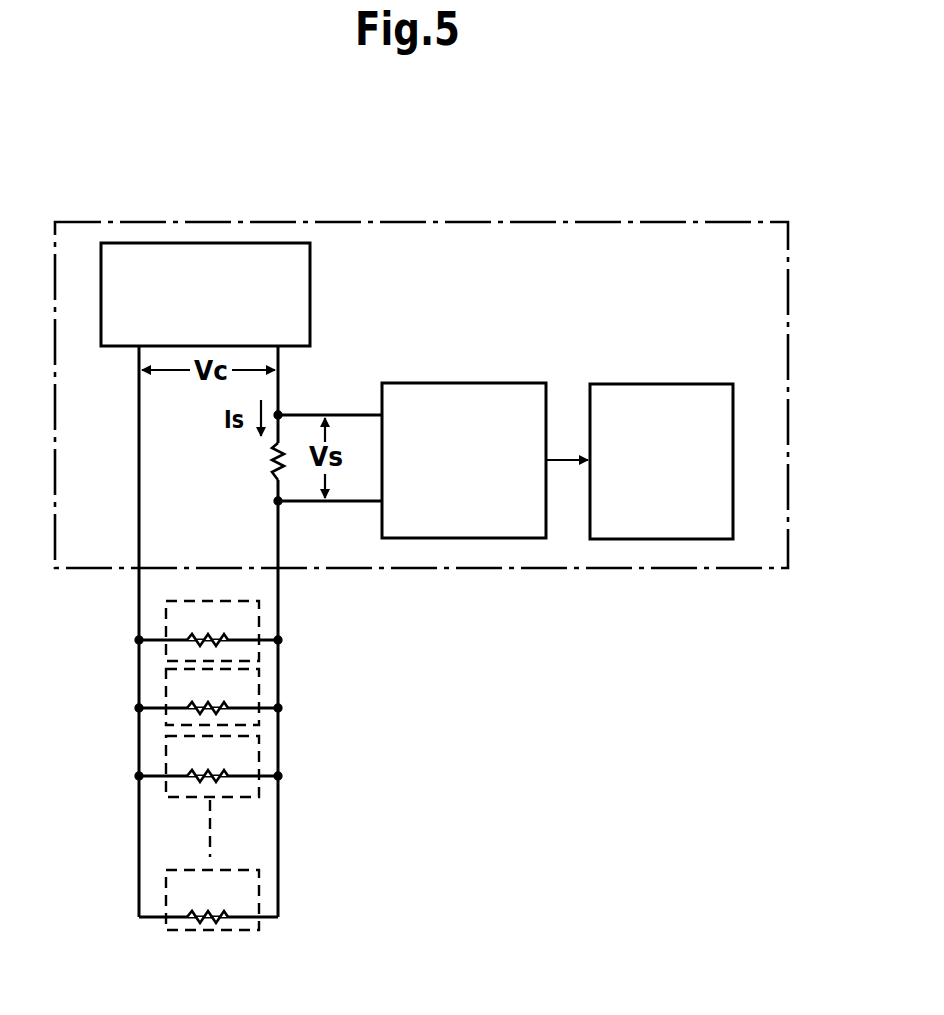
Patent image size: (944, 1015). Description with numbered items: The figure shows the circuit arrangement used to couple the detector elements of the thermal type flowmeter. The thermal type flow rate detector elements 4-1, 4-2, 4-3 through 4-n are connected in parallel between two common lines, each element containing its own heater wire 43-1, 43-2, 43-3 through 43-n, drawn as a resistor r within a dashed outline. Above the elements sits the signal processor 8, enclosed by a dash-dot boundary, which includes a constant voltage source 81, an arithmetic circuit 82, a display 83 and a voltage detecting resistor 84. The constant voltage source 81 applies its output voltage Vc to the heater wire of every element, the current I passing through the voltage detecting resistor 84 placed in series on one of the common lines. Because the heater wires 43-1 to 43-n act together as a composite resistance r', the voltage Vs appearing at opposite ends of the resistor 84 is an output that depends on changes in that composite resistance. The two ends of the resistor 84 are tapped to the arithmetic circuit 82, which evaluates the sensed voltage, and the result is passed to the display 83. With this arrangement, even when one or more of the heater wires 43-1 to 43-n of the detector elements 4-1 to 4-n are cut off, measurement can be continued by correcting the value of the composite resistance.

The signal processor 8 is at (681, 222).
The constant voltage source 81 is at (312, 289).
The arithmetic circuit 82 is at (484, 383).
The display 83 is at (650, 384).
The voltage detecting resistor 84 is at (284, 446).
The thermal type flow rate detector element 4-1 is at (259, 652).
The thermal type flow rate detector element 4-2 is at (259, 720).
The thermal type flow rate detector element 4-3 is at (259, 792).
The thermal type flow rate detector element 4-n is at (259, 925).
The heater wire 43-1 is at (187, 647).
The heater wire 43-2 is at (178, 716).
The heater wire 43-3 is at (180, 796).
The heater wire 43-n is at (186, 926).